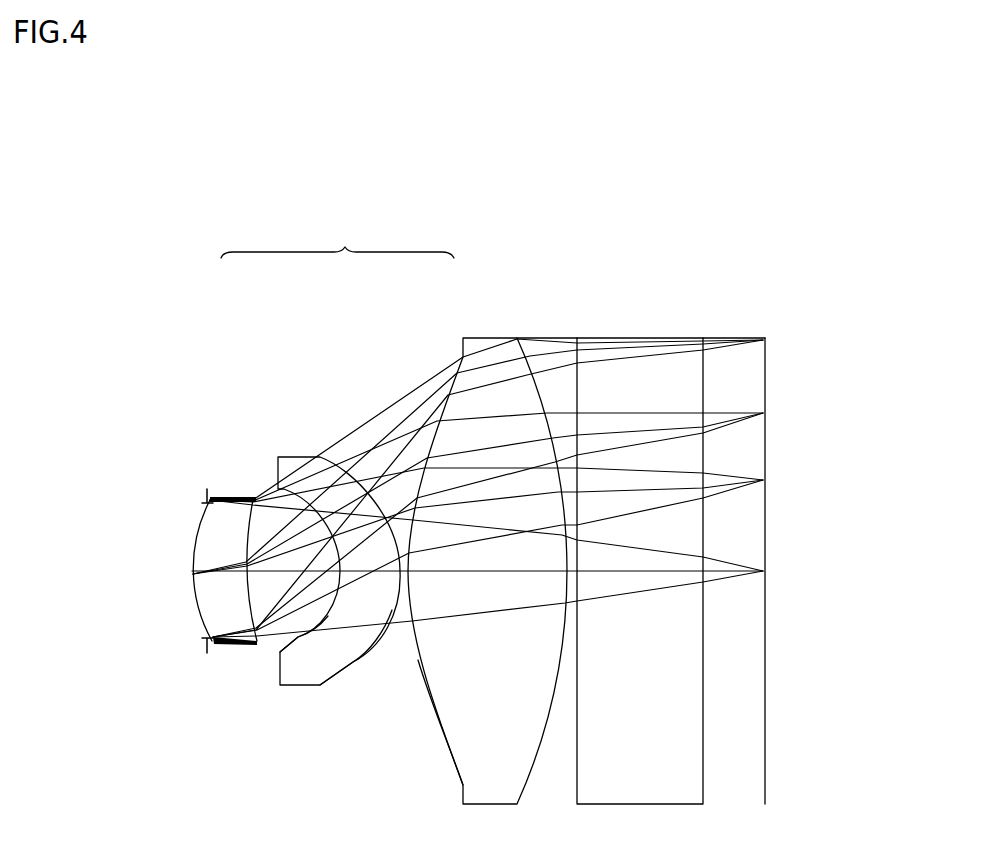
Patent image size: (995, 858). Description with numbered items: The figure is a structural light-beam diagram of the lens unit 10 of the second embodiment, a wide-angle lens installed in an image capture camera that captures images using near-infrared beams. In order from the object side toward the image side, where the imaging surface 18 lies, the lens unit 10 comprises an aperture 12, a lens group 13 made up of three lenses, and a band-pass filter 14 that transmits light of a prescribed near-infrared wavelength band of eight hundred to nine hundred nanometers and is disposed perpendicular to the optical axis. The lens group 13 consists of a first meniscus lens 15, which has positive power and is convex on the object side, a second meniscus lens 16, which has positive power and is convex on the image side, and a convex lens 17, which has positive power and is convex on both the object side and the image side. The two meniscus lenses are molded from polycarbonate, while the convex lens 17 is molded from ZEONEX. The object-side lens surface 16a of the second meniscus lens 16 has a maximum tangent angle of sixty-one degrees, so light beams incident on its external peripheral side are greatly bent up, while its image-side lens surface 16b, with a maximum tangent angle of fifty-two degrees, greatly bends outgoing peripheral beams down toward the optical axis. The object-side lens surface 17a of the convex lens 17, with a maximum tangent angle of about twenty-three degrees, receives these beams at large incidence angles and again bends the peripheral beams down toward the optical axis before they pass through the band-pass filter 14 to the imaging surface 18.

The lens unit 10 is at (769, 259).
The aperture 12 is at (206, 496).
The lens group 13 is at (337, 238).
The band-pass filter 14 is at (636, 338).
The first meniscus lens 15 is at (220, 492).
The second meniscus lens 16 is at (298, 456).
The lens surface 16a is at (297, 636).
The lens surface 16b is at (354, 663).
The convex lens 17 is at (470, 338).
The lens surface 17a is at (445, 740).
The imaging surface 18 is at (767, 390).